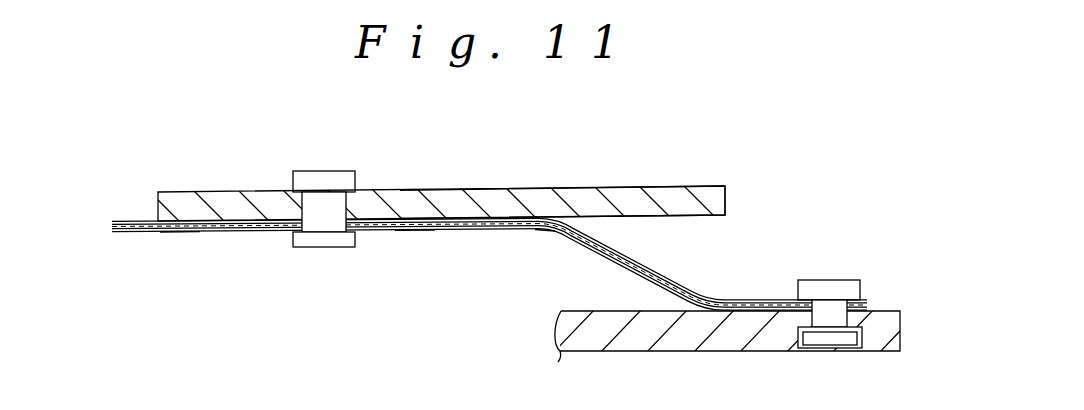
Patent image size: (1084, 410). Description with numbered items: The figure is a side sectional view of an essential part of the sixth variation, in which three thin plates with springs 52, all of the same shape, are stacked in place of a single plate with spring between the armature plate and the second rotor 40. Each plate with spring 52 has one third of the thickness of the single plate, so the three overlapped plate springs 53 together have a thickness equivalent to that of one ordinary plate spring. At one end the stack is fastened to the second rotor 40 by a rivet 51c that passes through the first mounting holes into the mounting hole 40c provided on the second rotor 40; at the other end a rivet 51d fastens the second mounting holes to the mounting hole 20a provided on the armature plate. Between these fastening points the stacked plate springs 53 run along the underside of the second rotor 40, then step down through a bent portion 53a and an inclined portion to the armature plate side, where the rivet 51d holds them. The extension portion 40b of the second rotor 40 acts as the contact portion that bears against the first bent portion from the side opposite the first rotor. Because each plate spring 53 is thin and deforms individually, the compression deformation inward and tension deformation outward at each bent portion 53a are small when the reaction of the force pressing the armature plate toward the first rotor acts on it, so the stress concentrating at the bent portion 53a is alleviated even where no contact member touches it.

The mounting hole 20a is at (299, 215).
The second rotor 40 is at (490, 190).
The extension portion 40b is at (550, 205).
The mounting hole 40c is at (810, 313).
The rivet 51c is at (310, 180).
The rivet 51d is at (833, 288).
The plate with spring 52 is at (165, 233).
The plate spring 53 is at (397, 230).
The bent portion 53a is at (537, 230).